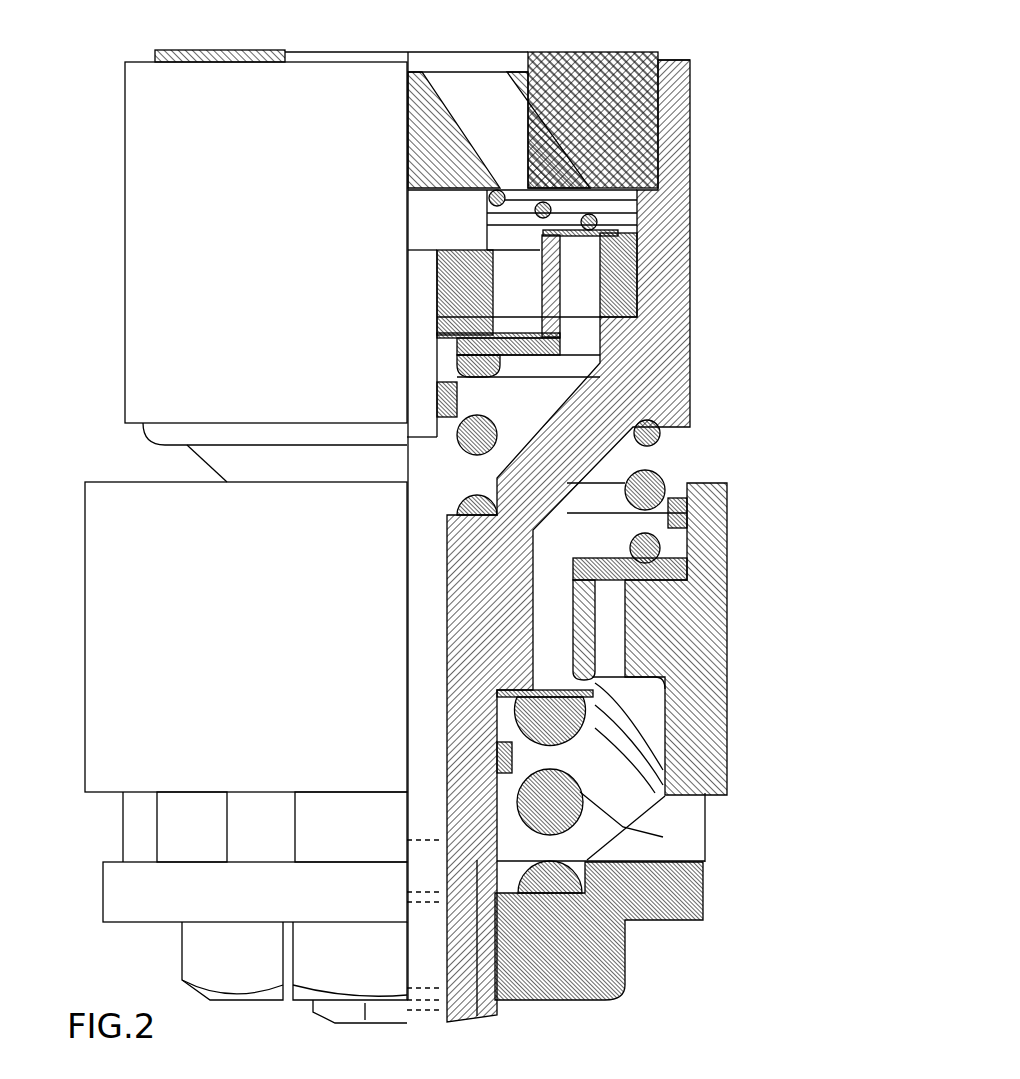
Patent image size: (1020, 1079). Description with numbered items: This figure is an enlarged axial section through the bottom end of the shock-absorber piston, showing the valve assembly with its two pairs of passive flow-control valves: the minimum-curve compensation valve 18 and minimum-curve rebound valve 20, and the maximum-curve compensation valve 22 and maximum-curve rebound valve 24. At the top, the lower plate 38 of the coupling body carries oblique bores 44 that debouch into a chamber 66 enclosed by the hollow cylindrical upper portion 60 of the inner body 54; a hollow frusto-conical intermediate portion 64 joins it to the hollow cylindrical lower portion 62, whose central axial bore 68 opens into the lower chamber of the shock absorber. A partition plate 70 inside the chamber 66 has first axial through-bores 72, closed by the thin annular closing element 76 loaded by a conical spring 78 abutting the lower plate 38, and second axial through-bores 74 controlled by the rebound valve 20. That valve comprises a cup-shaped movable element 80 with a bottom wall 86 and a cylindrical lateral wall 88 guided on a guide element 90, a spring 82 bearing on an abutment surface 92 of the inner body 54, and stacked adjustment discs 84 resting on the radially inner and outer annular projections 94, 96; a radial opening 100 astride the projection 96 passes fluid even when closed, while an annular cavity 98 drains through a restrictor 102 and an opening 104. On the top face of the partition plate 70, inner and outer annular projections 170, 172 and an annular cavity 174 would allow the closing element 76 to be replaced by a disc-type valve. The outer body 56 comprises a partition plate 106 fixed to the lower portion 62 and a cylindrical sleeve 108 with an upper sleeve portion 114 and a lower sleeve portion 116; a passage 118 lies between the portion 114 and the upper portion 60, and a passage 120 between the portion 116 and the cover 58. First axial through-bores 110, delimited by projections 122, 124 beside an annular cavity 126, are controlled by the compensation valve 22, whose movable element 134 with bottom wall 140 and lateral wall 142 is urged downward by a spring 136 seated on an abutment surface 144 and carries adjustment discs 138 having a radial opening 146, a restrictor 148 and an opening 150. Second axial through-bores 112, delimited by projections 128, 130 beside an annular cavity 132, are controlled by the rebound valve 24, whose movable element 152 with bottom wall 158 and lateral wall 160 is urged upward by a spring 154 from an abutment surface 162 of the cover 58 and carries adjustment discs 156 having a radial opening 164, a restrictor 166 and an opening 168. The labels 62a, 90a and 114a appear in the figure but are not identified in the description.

The minimum-curve compensation valve 18 is at (588, 190).
The minimum-curve rebound valve 20 is at (437, 243).
The maximum-curve compensation valve 22 is at (727, 604).
The maximum-curve rebound valve 24 is at (727, 767).
The lower plate 38 is at (633, 73).
The oblique bores 44 is at (450, 107).
The inner body 54 is at (692, 282).
The outer body 56 is at (727, 665).
The cover 58 is at (627, 947).
The hollow cylindrical upper portion 60 is at (690, 168).
The hollow cylindrical lower portion 62 is at (540, 720).
The ball surface 62a is at (460, 800).
The hollow frusto-conical intermediate portion 64 is at (700, 478).
The chamber 66 is at (690, 370).
The central axial bore 68 is at (442, 963).
The partition plate 70 is at (690, 295).
The first axial through-bores 72 is at (690, 312).
The second axial through-bores 74 is at (440, 302).
The closing element 76 is at (690, 205).
The spring 78 is at (540, 190).
The movable element 80 is at (690, 387).
The spring 82 is at (660, 432).
The adjustment discs 84 is at (440, 330).
The bottom wall 86 is at (440, 320).
The cylindrical lateral wall 88 is at (440, 398).
The guide element 90 is at (417, 368).
The sleeve flange 90a is at (437, 270).
The abutment surface 92 is at (460, 500).
The radially inner annular projection 94 is at (440, 322).
The radially outer annular projection 96 is at (690, 335).
The annular cavity 98 is at (690, 395).
The radial opening 100 is at (690, 350).
The restrictor 102 is at (440, 352).
The opening 104 is at (440, 370).
The partition plate 106 is at (500, 640).
The cylindrical sleeve 108 is at (727, 683).
The first axial through-bores 110 is at (727, 700).
The second axial through-bores 112 is at (540, 617).
The upper sleeve portion 114 is at (727, 557).
The spring end 114a is at (727, 637).
The lower sleeve portion 116 is at (727, 735).
The passage 118 is at (673, 435).
The passage 120 is at (705, 817).
The radially inner annular projection 122 is at (590, 595).
The radially outer annular projection 124 is at (727, 653).
The annular cavity 126 is at (727, 620).
The radially inner annular projection 128 is at (595, 703).
The radially outer annular projection 130 is at (727, 718).
The annular cavity 132 is at (565, 661).
The movable element 134 is at (727, 526).
The spring 136 is at (727, 508).
The adjustment discs 138 is at (727, 572).
The bottom wall 140 is at (540, 548).
The cylindrical lateral wall 142 is at (727, 542).
The abutment surface 144 is at (650, 458).
The radial opening 146 is at (590, 571).
The restrictor 148 is at (727, 587).
The opening 150 is at (457, 500).
The movable element 152 is at (705, 833).
The spring 154 is at (703, 895).
The adjustment discs 156 is at (705, 800).
The bottom wall 158 is at (727, 783).
The cylindrical lateral wall 160 is at (540, 770).
The abutment surface 162 is at (627, 970).
The radial opening 164 is at (727, 752).
The restrictor 166 is at (545, 690).
The opening 168 is at (560, 745).
The radially inner annular projection 170 is at (437, 227).
The radially outer annular projection 172 is at (690, 225).
The annular cavity 174 is at (690, 245).